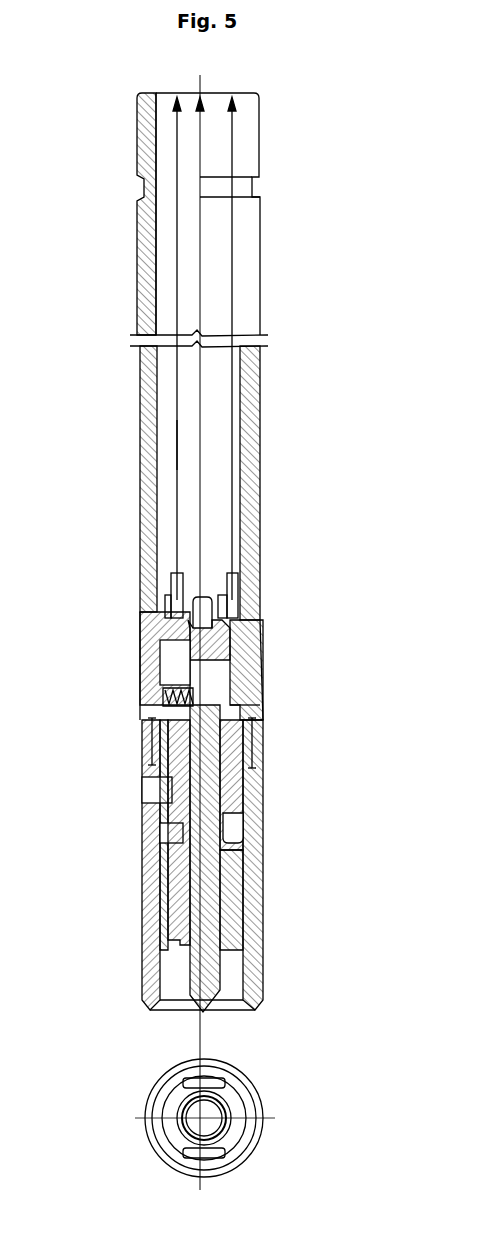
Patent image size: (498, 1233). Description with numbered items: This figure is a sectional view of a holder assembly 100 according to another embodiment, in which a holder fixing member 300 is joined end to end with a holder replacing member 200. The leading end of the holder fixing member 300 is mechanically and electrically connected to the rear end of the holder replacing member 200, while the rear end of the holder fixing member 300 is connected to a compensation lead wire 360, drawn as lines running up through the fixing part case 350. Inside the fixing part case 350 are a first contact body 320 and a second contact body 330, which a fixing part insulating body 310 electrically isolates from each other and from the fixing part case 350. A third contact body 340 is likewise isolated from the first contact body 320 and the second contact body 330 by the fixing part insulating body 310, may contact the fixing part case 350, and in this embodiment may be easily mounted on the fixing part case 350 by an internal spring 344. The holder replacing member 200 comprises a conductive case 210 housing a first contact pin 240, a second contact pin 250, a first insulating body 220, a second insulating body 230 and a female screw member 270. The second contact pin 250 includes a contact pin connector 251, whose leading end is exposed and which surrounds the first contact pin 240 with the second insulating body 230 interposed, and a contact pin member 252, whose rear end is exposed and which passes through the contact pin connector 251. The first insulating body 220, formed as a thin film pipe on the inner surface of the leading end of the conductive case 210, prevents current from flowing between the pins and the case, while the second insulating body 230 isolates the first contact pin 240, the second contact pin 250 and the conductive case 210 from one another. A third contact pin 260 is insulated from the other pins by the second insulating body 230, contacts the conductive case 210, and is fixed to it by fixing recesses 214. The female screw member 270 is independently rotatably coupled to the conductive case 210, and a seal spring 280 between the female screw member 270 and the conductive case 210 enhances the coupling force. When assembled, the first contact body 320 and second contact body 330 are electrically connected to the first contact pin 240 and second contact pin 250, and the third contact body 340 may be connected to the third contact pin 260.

The injector / device 100 is at (112, 603).
The holder replacing member 200 is at (144, 865).
The conductive case 210 is at (150, 977).
The fixing recesses 214 is at (143, 778).
The first insulating body 220 is at (158, 946).
The second insulating body 230 is at (186, 927).
The first contact pin 240 is at (213, 972).
The second contact pin 250 is at (301, 835).
The contact pin connector 251 is at (231, 877).
The contact pin member 252 is at (231, 809).
The third contact pin 260 is at (153, 728).
The female screw member 270 is at (254, 752).
The seal spring 280 is at (256, 713).
The holder fixing member 300 is at (133, 462).
The fixing part insulating body 310 is at (250, 690).
The first contact body 320 is at (214, 641).
The second contact body 330 is at (229, 604).
The third contact body 340 is at (176, 668).
The internal spring 344 is at (171, 697).
The fixing part case 350 is at (147, 543).
The compensation lead wire 360 is at (177, 467).